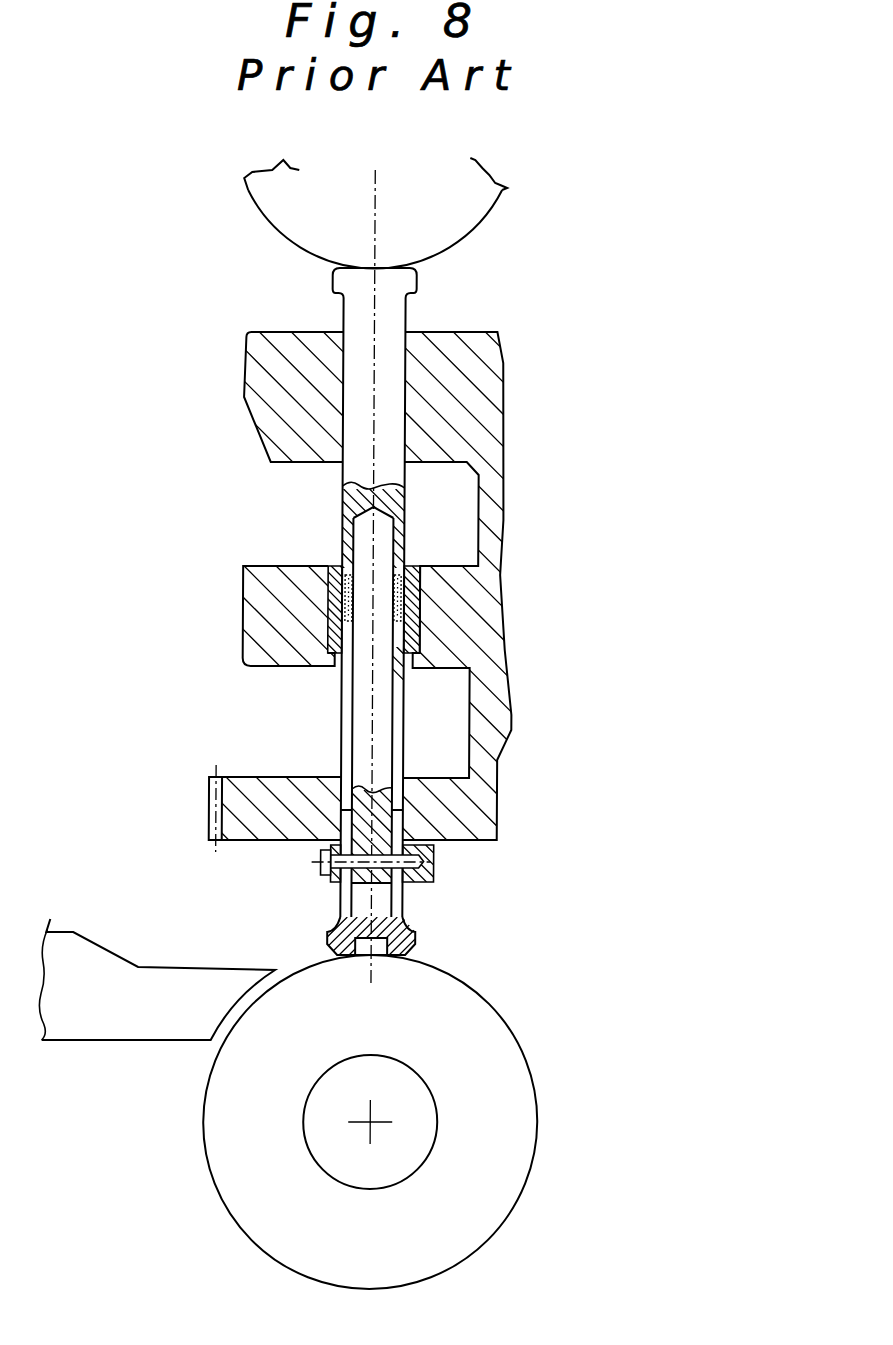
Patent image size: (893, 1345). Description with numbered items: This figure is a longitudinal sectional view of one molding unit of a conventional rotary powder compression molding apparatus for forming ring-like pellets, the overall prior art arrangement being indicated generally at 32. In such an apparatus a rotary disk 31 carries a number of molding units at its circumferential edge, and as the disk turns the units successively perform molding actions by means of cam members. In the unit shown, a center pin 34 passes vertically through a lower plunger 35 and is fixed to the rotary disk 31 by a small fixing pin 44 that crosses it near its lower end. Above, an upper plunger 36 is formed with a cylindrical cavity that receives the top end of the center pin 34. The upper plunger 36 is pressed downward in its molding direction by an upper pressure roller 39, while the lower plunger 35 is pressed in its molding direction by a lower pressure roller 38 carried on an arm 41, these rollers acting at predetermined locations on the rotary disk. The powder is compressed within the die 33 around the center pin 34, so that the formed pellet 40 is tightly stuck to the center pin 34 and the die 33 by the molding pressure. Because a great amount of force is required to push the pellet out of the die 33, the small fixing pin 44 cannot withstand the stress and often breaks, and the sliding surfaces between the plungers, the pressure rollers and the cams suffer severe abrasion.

The rotary disk 31 is at (260, 580).
The stem assembly 32 is at (322, 310).
The die 33 is at (420, 633).
The center pin 34 is at (378, 703).
The lower plunger 35 is at (400, 762).
The upper plunger 36 is at (388, 417).
The lower pressure roller 38 is at (447, 1022).
The upper pressure roller 39 is at (445, 215).
The pellet 40 is at (405, 592).
The arm 41 is at (100, 978).
The fixing pin 44 is at (320, 865).